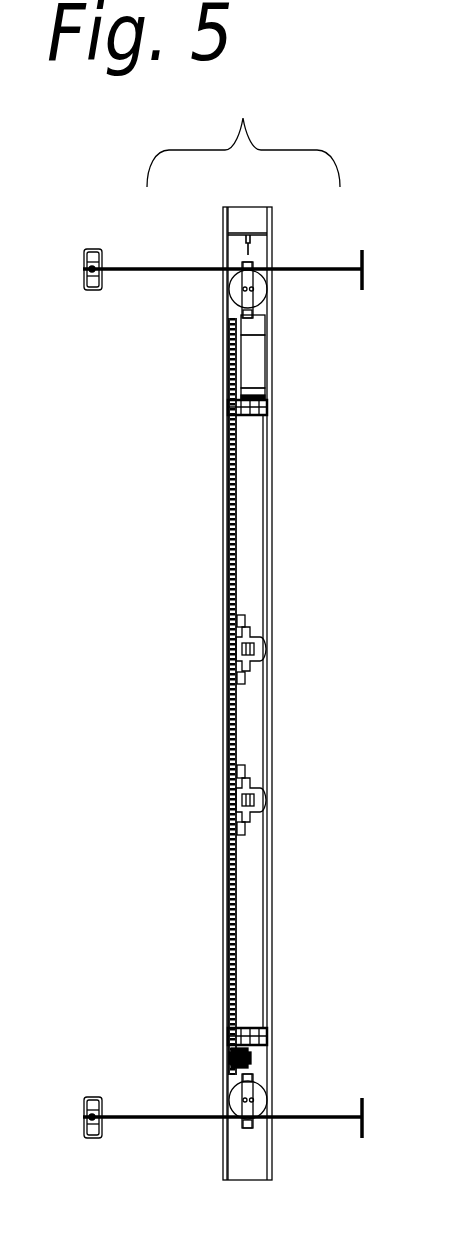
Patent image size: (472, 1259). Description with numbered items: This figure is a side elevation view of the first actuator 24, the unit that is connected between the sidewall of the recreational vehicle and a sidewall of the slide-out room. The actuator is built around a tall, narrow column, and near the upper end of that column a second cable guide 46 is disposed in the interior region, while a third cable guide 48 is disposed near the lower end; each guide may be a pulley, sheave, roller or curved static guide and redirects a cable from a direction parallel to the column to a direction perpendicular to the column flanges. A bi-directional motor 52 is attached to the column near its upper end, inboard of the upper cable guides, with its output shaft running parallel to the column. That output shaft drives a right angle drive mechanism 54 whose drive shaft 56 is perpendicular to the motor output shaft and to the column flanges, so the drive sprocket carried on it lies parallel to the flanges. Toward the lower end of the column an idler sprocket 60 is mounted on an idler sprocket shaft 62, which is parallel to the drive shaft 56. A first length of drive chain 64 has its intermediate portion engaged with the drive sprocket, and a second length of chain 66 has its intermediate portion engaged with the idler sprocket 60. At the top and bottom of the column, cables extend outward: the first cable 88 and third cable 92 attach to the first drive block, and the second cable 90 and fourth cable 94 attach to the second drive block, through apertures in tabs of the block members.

The first actuator 24 is at (243, 138).
The second cable guide 46 is at (233, 295).
The third cable guide 48 is at (255, 1100).
The bi-directional motor 52 is at (258, 363).
The right angle drive mechanism 54 is at (258, 325).
The drive shaft 56 is at (228, 330).
The idler sprocket 60 is at (243, 1053).
The idler sprocket shaft 62 is at (252, 1059).
The first length of drive chain 64 is at (232, 380).
The second length of chain 66 is at (238, 912).
The first cable 88 is at (313, 268).
The second cable 90 is at (167, 268).
The third cable 92 is at (315, 1118).
The fourth cable 94 is at (158, 1118).